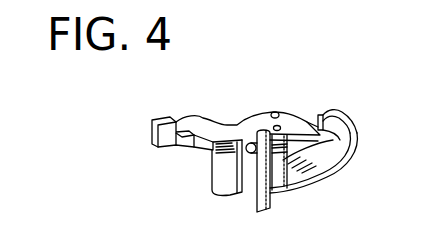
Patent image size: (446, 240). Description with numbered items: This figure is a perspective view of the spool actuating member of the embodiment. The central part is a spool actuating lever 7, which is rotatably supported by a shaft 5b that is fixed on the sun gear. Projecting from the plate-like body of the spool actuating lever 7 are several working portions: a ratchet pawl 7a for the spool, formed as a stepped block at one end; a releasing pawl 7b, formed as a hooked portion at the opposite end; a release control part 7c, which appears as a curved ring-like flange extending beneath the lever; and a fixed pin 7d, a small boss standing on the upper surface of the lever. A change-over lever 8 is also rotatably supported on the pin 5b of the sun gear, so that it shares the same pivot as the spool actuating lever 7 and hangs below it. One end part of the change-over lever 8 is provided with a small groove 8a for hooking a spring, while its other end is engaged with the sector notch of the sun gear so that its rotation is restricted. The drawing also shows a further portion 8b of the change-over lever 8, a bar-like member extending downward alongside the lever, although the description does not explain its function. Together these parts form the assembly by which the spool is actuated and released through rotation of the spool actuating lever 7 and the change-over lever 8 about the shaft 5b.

The spool actuating lever 7 is at (223, 125).
The ratchet pawl 7a is at (164, 119).
The releasing pawl 7b is at (326, 114).
The release control part 7c is at (330, 163).
The fixed pin 7d is at (275, 111).
The shaft 5b is at (280, 126).
The change-over lever 8 is at (278, 173).
The small groove 8a is at (247, 141).
The bar 8b is at (257, 208).